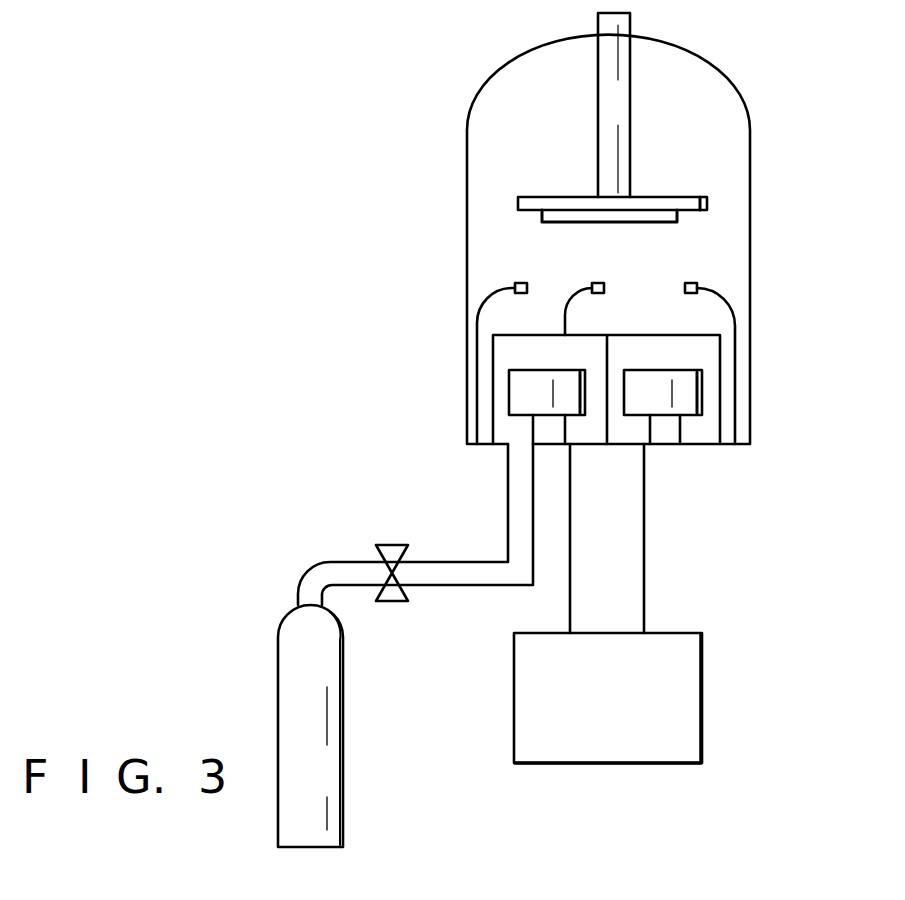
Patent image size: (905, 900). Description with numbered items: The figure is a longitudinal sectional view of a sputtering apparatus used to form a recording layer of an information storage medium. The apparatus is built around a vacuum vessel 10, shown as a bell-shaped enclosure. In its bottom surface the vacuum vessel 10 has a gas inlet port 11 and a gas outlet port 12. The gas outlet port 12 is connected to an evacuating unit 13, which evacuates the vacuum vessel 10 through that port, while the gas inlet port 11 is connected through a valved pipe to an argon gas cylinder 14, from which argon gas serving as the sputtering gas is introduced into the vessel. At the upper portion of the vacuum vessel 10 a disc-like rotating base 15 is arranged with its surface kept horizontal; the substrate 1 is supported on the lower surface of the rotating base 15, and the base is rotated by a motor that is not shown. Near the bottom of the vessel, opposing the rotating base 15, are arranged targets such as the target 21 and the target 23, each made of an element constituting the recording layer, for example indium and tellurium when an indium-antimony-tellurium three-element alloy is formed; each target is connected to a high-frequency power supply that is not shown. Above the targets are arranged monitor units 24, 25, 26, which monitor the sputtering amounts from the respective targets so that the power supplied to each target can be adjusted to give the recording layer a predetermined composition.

The vacuum vessel 10 is at (730, 85).
The rotating base 15 is at (688, 197).
The substrate 1 is at (654, 222).
The monitor unit 24 is at (514, 283).
The monitor unit 25 is at (598, 283).
The monitor unit 26 is at (692, 283).
The target 21 is at (528, 370).
The target 23 is at (644, 370).
The gas inlet port 11 is at (520, 443).
The gas outlet port 12 is at (630, 497).
The evacuating unit 13 is at (702, 716).
The argon gas cylinder 14 is at (330, 770).